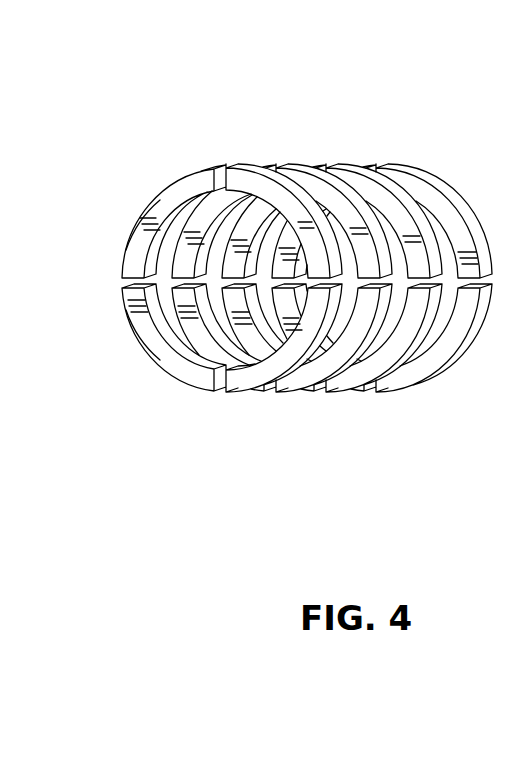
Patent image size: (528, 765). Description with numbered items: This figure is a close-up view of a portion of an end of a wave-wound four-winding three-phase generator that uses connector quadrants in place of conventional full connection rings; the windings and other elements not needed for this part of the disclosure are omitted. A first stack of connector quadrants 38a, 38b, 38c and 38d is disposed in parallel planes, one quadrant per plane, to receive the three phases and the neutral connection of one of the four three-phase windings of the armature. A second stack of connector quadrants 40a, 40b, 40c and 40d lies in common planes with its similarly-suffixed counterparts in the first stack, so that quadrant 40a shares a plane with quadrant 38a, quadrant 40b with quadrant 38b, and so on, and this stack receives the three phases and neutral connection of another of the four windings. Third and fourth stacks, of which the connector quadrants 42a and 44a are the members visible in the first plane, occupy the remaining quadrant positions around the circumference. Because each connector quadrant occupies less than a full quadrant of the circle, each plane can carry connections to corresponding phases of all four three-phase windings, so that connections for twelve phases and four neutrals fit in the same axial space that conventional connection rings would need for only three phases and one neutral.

The connector quadrant 38a is at (253, 167).
The connector quadrant 38b is at (308, 168).
The connector quadrant 38c is at (362, 167).
The connector quadrant 38d is at (417, 167).
The connector quadrant 40a is at (255, 378).
The connector quadrant 40b is at (316, 369).
The connector quadrant 40c is at (383, 363).
The connector quadrant 40d is at (451, 347).
The connector quadrant 42a is at (158, 357).
The connector quadrant 44a is at (160, 202).